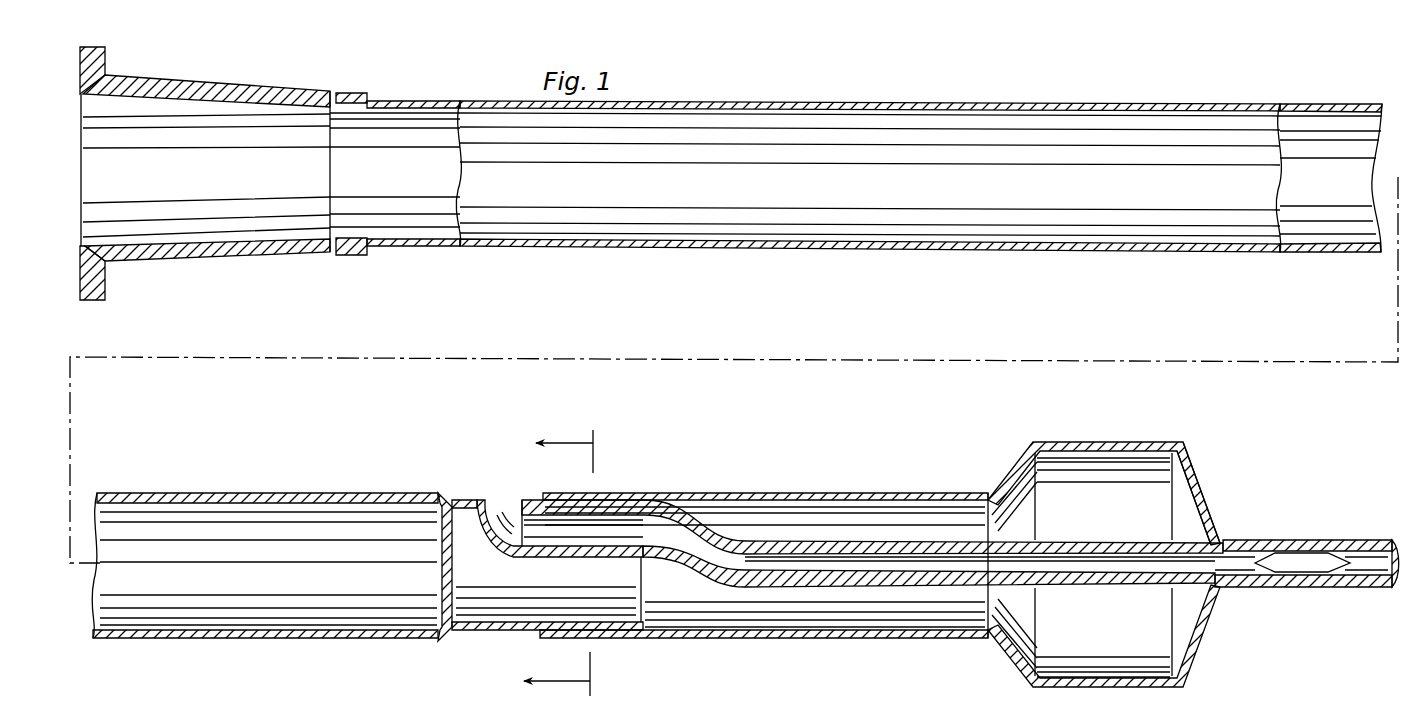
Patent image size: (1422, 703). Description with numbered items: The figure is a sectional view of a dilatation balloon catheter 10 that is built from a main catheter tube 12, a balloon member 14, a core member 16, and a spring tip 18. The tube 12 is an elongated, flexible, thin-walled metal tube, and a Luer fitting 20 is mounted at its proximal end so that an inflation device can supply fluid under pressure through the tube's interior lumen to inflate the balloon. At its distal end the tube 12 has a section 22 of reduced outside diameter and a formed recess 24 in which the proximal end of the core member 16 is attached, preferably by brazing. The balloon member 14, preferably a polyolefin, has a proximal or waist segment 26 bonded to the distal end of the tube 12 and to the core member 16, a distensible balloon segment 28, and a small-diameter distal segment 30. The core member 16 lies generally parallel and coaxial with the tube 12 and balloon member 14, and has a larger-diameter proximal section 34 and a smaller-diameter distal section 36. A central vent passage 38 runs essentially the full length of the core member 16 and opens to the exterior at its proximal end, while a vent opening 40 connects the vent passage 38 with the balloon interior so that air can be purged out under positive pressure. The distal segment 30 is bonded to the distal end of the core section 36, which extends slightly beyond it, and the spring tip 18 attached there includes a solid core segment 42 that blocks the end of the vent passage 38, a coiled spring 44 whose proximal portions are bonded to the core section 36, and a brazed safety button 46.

The catheter 10 is at (845, 462).
The main catheter tube 12 is at (420, 641).
The balloon member 14 is at (882, 489).
The core member 16 is at (874, 539).
The spring tip 18 is at (1307, 534).
The Luer fitting 20 is at (325, 88).
The section of reduced outside diameter 22 is at (474, 632).
The formed recess 24 is at (508, 494).
The proximal segment 26 is at (765, 492).
The distensible balloon segment 28 is at (1085, 442).
The distal segment 30 is at (1215, 588).
The proximal section 34 is at (822, 590).
The distal section 36 is at (1045, 586).
The central vent passage 38 is at (995, 563).
The vent opening 40 is at (1195, 545).
The solid core segment 42 is at (1302, 565).
The coiled spring 44 is at (1330, 590).
The brazed safety button 46 is at (1395, 590).